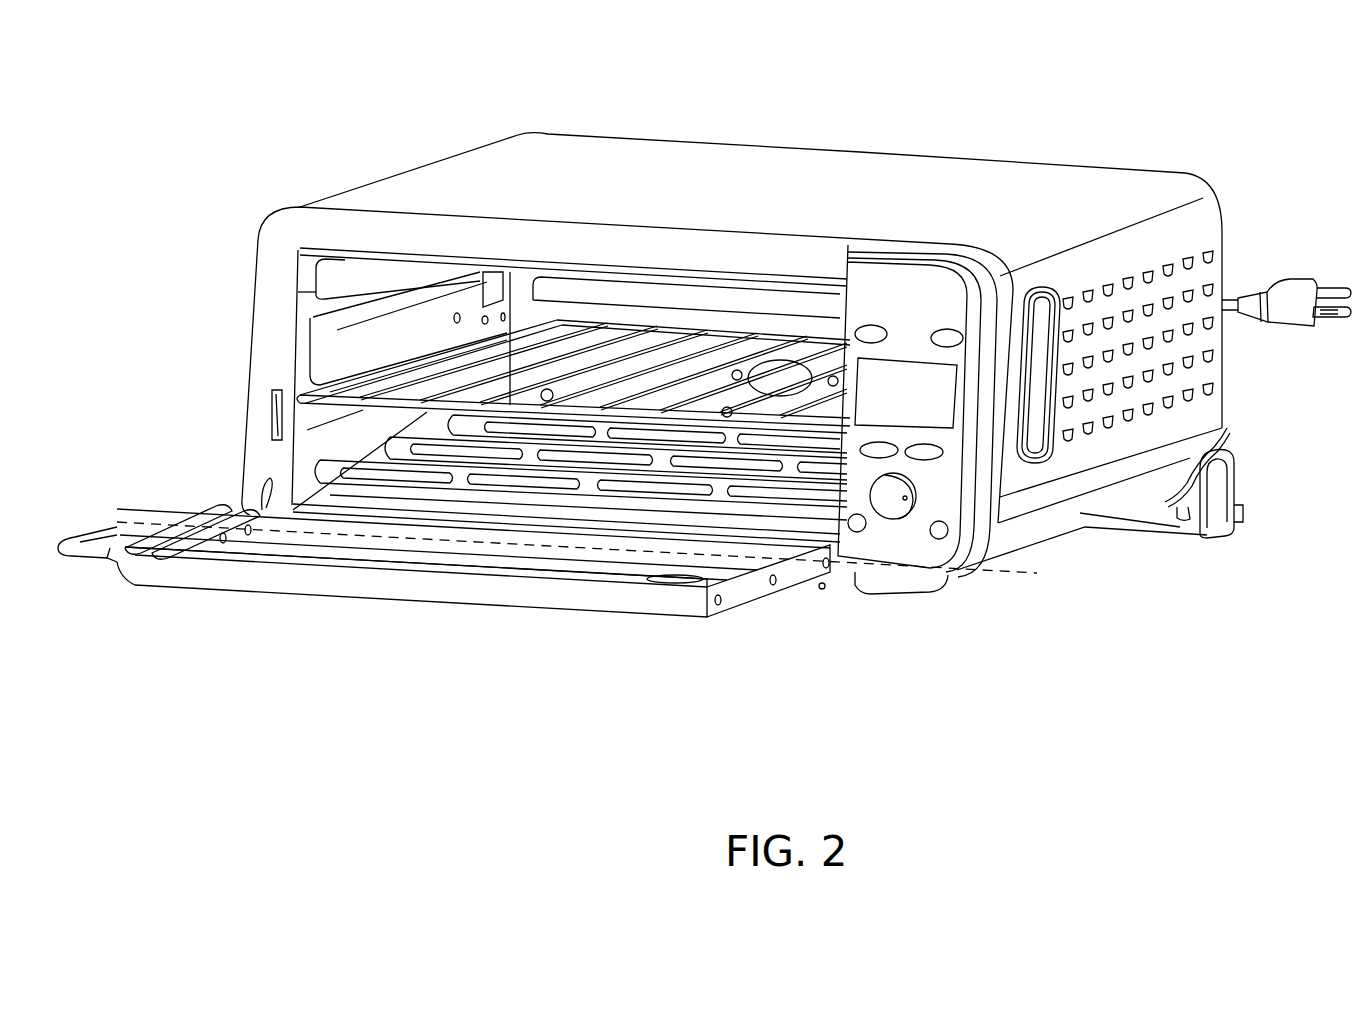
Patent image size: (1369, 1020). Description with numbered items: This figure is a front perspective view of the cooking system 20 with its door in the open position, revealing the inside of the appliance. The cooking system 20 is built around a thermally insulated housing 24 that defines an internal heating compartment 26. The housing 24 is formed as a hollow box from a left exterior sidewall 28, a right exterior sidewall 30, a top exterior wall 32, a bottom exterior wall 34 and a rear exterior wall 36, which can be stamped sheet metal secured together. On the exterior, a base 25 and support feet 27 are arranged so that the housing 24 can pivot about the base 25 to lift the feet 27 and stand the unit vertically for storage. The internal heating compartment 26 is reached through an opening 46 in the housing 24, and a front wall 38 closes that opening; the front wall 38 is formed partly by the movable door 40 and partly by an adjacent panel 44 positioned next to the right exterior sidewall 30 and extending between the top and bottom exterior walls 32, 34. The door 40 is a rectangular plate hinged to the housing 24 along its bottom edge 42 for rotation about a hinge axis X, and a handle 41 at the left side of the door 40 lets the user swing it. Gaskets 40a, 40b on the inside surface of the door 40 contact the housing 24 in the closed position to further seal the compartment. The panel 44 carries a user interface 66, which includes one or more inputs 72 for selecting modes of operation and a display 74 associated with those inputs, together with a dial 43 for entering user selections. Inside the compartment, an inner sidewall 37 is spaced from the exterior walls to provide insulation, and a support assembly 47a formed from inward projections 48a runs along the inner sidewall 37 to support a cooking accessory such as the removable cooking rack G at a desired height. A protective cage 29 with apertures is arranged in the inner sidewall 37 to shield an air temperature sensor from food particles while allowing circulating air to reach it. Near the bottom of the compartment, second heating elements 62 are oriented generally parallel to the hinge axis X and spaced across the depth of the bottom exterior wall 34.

The cooking system 20 is at (292, 136).
The housing 24 is at (545, 135).
The base 25 is at (1180, 527).
The internal heating compartment 26 is at (711, 322).
The support feet 27 is at (912, 588).
The left exterior sidewall 28 is at (243, 425).
The protective cage 29 is at (496, 280).
The right exterior sidewall 30 is at (1210, 277).
The top exterior wall 32 is at (913, 170).
The bottom exterior wall 34 is at (1058, 488).
The rear exterior wall 36 is at (1225, 398).
The inner sidewall 37 is at (323, 276).
The front wall 38 is at (822, 590).
The door 40 is at (505, 595).
The gasket 40a is at (163, 530).
The gasket 40b is at (762, 573).
The handle 41 is at (80, 560).
The bottom edge 42 is at (285, 533).
The dial 43 is at (898, 508).
The panel 44 is at (890, 274).
The opening 46 is at (612, 272).
The support assembly 47a is at (306, 292).
The projections 48a is at (315, 368).
The second heating element 62 is at (618, 487).
The user interface 66 is at (950, 292).
The input 72 is at (873, 328).
The display 74 is at (923, 360).
The removable cooking rack G is at (420, 353).
The hinge axis X is at (838, 570).